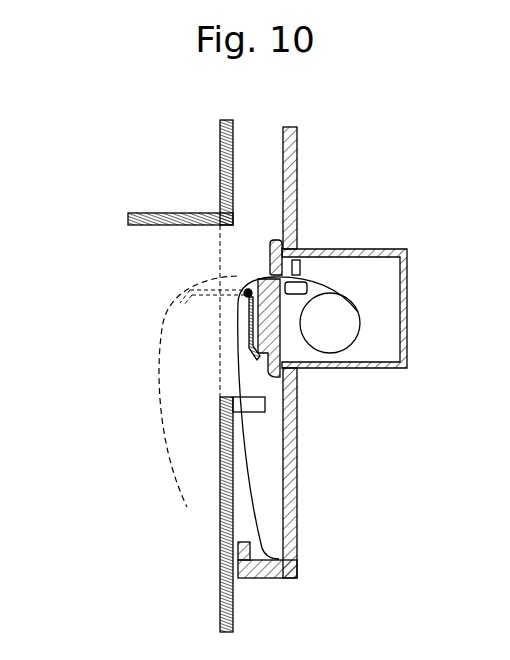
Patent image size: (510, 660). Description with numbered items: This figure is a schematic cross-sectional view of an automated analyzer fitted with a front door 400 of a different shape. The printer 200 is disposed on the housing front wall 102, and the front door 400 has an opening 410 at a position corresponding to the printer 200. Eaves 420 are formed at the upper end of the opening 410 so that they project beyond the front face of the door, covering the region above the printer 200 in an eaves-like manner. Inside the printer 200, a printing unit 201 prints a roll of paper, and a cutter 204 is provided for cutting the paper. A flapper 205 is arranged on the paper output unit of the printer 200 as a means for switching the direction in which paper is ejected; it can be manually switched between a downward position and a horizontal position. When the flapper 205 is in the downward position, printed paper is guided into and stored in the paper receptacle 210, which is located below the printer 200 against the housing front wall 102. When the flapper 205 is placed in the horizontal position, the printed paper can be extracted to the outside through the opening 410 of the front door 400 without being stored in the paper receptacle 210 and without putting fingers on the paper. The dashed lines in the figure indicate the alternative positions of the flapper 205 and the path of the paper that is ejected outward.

The housing front wall 102 is at (296, 146).
The printer 200 is at (390, 298).
The printing unit 201 is at (298, 276).
The cutter 204 is at (270, 273).
The flapper 205 is at (209, 297).
The paper receptacle 210 is at (272, 495).
The front door 400 is at (220, 561).
The opening 410 is at (120, 315).
The eaves 420 is at (160, 212).